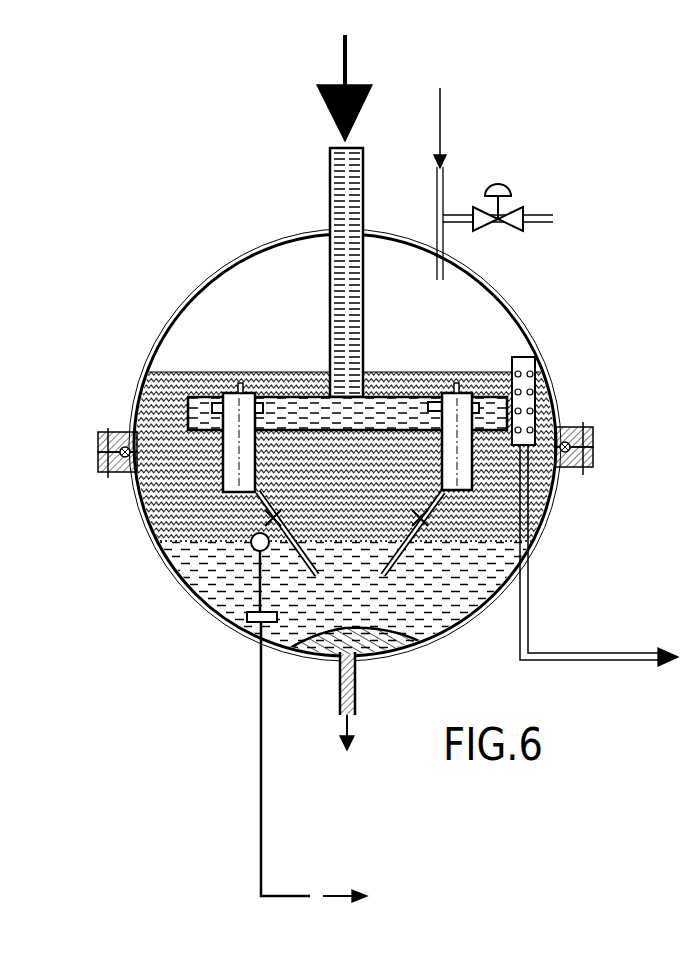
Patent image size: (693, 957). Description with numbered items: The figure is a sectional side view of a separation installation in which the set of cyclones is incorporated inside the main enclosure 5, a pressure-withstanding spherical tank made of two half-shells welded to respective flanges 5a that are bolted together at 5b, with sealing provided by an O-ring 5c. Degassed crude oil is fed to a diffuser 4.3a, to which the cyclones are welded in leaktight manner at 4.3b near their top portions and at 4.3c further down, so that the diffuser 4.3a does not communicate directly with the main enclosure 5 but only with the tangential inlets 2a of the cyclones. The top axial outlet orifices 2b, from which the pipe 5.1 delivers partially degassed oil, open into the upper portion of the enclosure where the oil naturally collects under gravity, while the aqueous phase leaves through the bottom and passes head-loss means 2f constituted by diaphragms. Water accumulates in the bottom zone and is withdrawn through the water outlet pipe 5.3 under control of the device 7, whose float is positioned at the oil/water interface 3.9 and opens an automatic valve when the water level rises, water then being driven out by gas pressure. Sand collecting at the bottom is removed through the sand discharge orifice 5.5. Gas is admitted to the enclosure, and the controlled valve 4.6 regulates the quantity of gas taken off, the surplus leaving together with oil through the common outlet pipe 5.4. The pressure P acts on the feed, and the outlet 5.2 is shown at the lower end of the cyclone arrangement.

The main enclosure 5 is at (210, 277).
The flanges 5a is at (324, 450).
The bolted assembly of the flanges 5b is at (123, 432).
The O-ring 5c is at (125, 472).
The pipe 5.1 is at (219, 414).
The top axial outlet orifices 2b is at (238, 380).
The tangential inlets 2a is at (265, 405).
The head-loss means 2f is at (283, 513).
The diffuser 4.3a is at (407, 406).
The weld at top portions of the cyclones 4.3b is at (480, 393).
The weld further down the cyclones 4.3c is at (482, 442).
The controlled valve 4.6 is at (498, 185).
The oil/water interface 3.9 is at (157, 527).
The inclined outlet nozzle 5.2 is at (254, 498).
The device for controlling the discharge of water 7 is at (246, 618).
The water outlet pipe 5.3 is at (270, 795).
The common outlet pipe for oil and gas 5.4 is at (590, 665).
The sand discharge orifice 5.5 is at (357, 689).
The pressure / feed inlet P is at (344, 216).